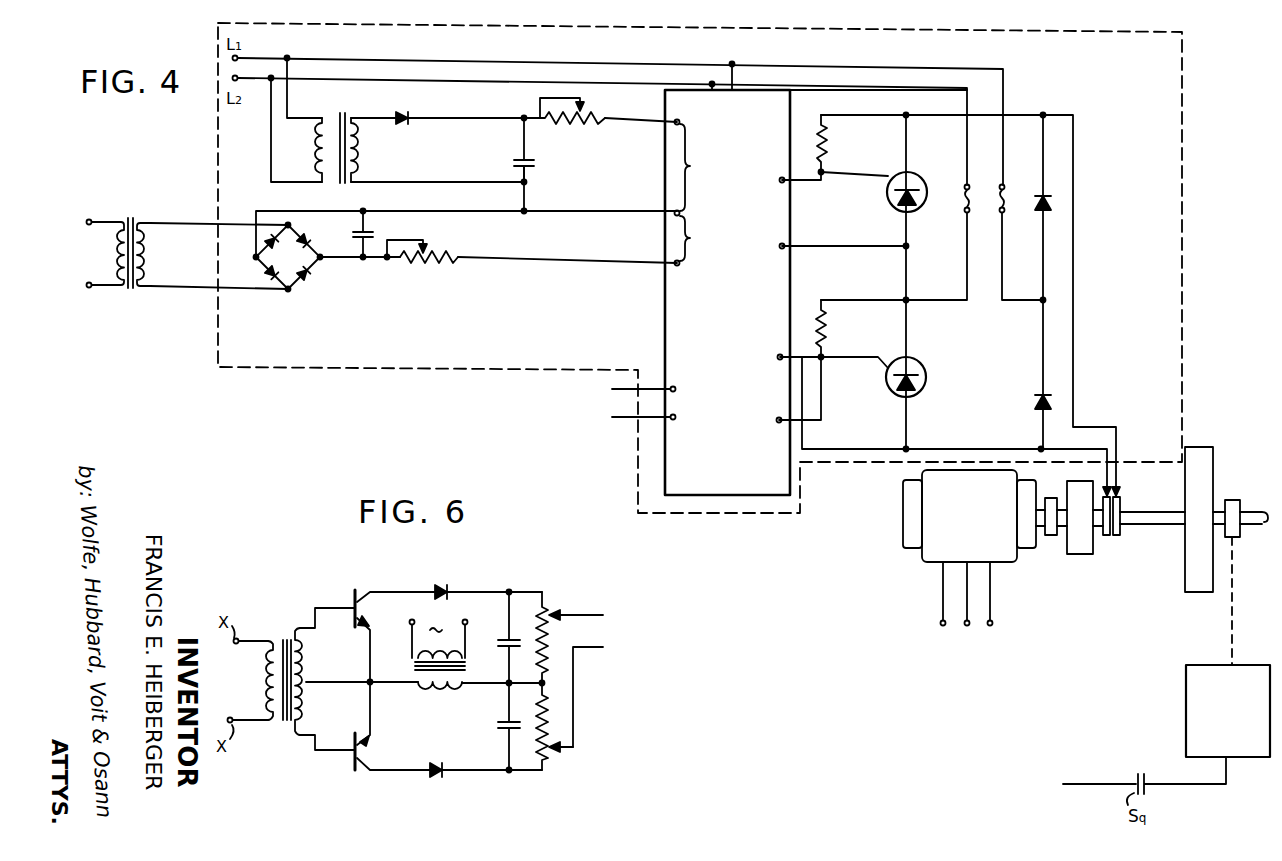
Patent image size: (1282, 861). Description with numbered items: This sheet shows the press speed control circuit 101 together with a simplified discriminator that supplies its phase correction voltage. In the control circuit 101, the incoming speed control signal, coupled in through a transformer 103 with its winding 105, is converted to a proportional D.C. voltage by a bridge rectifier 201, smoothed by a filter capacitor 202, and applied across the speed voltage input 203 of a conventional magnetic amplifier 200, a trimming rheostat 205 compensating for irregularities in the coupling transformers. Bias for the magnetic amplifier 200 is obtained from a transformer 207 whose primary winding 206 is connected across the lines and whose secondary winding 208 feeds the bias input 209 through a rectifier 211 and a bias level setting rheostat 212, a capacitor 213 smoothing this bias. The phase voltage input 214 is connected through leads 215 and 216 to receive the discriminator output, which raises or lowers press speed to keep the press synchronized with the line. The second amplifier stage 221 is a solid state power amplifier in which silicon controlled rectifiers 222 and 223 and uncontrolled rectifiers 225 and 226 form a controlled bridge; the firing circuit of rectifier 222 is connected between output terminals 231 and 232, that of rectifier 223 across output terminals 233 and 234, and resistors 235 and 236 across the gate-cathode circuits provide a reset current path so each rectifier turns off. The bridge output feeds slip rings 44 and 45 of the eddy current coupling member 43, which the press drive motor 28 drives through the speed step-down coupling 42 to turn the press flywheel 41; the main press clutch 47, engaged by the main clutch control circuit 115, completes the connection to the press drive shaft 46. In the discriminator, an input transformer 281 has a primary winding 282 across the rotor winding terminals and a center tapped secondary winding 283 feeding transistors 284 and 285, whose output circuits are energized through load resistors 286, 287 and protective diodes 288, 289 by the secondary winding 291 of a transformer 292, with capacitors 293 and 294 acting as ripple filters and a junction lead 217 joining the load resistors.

In FIG. 4, the control circuit 101 is at (923, 28).
In FIG. 4, the transformer 103 is at (101, 230).
In FIG. 4, the primary winding 105 is at (108, 248).
In FIG. 4, the magnetic amplifier 200 is at (713, 263).
In FIG. 4, the bridge rectifier 201 is at (288, 257).
In FIG. 4, the filter capacitor 202 is at (378, 230).
In FIG. 4, the speed voltage input 203 is at (668, 238).
In FIG. 4, the trimming rheostat 205 is at (425, 266).
In FIG. 4, the primary winding 206 is at (318, 143).
In FIG. 4, the transformer 207 is at (346, 108).
In FIG. 4, the secondary winding 208 is at (366, 140).
In FIG. 4, the bias input 209 is at (674, 168).
In FIG. 4, the rectifier 211 is at (400, 108).
In FIG. 4, the bias level setting rheostat 212 is at (576, 126).
In FIG. 4, the capacitor 213 is at (534, 170).
In FIG. 4, the phase voltage input 214 is at (619, 395).
In FIG. 4, the lead 215 is at (612, 389).
In FIG. 6, the lead 215 is at (600, 614).
In FIG. 4, the lead 216 is at (612, 417).
In FIG. 6, the lead 216 is at (590, 647).
In FIG. 6, the junction lead 217 is at (552, 684).
In FIG. 4, the second amplifier stage 221 is at (948, 118).
In FIG. 4, the silicon controlled rectifier 222 is at (918, 177).
In FIG. 4, the silicon controlled rectifier 223 is at (923, 370).
In FIG. 4, the uncontrolled rectifier 225 is at (1056, 204).
In FIG. 4, the uncontrolled rectifier 226 is at (1056, 394).
In FIG. 4, the output terminal 231 is at (785, 174).
In FIG. 4, the output terminal 232 is at (783, 249).
In FIG. 4, the output terminal 233 is at (781, 354).
In FIG. 4, the output terminal 234 is at (780, 423).
In FIG. 4, the resistor 235 is at (832, 138).
In FIG. 4, the resistor 236 is at (822, 324).
In FIG. 4, the press drive motor 28 is at (934, 546).
In FIG. 4, the press flywheel 41 is at (1200, 446).
In FIG. 4, the speed step-down coupling 42 is at (1050, 545).
In FIG. 4, the coupling member 43 is at (1082, 556).
In FIG. 4, the slip ring 44 is at (1107, 538).
In FIG. 4, the slip ring 45 is at (1117, 538).
In FIG. 4, the press drive shaft 46 is at (1256, 512).
In FIG. 4, the main press clutch 47 is at (1233, 499).
In FIG. 4, the main clutch control circuit 115 is at (1186, 700).
In FIG. 6, the input transformer 281 is at (287, 660).
In FIG. 6, the primary winding 282 is at (276, 688).
In FIG. 6, the center tapped secondary winding 283 is at (306, 669).
In FIG. 6, the transistor 284 is at (362, 591).
In FIG. 6, the transistor 285 is at (350, 776).
In FIG. 6, the load resistor 286 is at (546, 604).
In FIG. 6, the load resistor 287 is at (538, 766).
In FIG. 6, the reverse current blocking protective diode 288 is at (434, 582).
In FIG. 6, the reverse current blocking protective diode 289 is at (436, 776).
In FIG. 6, the secondary winding 291 is at (422, 690).
In FIG. 6, the transformer 292 is at (439, 662).
In FIG. 6, the capacitor 293 is at (504, 634).
In FIG. 6, the capacitor 294 is at (502, 732).